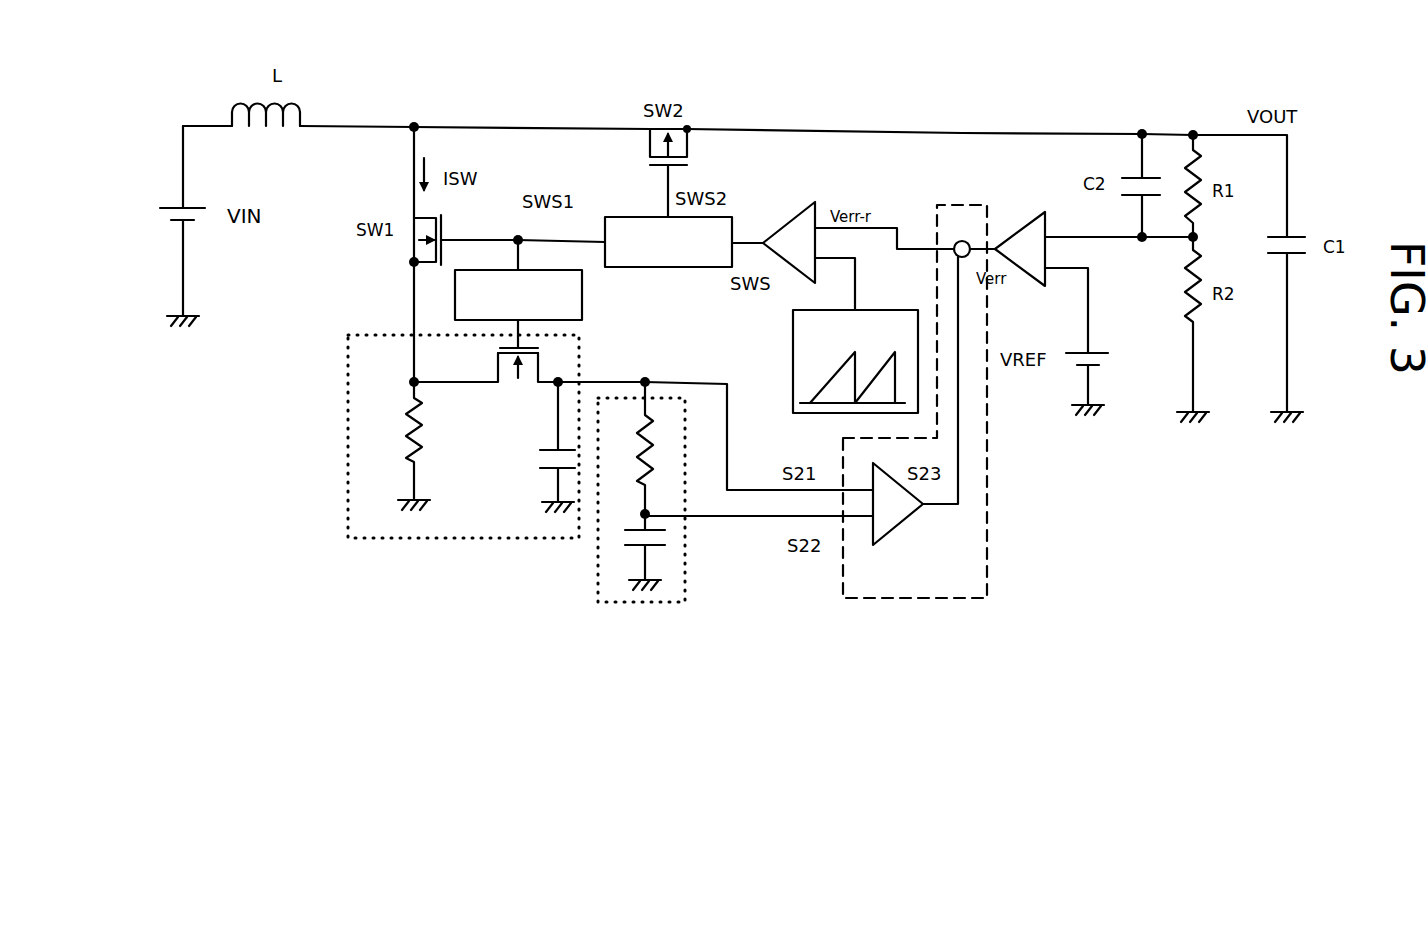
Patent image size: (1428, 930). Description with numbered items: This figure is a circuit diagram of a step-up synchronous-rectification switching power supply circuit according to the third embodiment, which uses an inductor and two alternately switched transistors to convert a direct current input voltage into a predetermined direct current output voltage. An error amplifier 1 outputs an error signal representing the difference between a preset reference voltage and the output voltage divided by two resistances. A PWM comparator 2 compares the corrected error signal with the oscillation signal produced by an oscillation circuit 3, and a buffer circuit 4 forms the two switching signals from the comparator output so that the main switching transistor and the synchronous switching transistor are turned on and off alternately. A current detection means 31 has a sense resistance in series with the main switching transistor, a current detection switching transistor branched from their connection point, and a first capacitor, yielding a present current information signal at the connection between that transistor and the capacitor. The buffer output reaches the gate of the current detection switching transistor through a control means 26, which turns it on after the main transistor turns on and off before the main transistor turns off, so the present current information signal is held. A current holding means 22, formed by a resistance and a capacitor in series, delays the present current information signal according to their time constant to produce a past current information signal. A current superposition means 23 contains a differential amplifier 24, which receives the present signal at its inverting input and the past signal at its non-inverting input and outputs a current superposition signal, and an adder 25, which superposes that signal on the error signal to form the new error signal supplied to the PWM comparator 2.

The error amplifier 1 is at (1023, 250).
The PWM comparator 2 is at (793, 242).
The oscillation circuit 3 is at (793, 398).
The buffer circuit 4 is at (707, 260).
The current holding means 22 is at (628, 604).
The current superposition means 23 is at (975, 397).
The differential amplifier 24 is at (898, 524).
The adder 25 is at (962, 241).
The control means 26 is at (582, 300).
The current detection means 31 is at (422, 539).